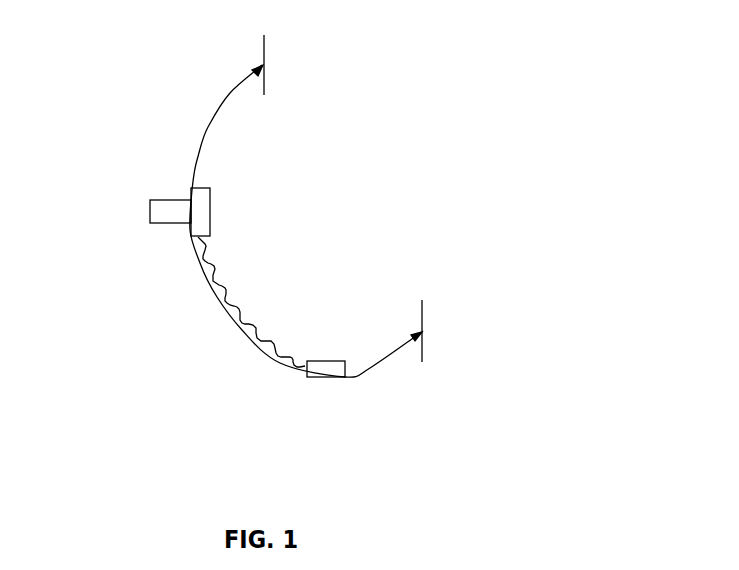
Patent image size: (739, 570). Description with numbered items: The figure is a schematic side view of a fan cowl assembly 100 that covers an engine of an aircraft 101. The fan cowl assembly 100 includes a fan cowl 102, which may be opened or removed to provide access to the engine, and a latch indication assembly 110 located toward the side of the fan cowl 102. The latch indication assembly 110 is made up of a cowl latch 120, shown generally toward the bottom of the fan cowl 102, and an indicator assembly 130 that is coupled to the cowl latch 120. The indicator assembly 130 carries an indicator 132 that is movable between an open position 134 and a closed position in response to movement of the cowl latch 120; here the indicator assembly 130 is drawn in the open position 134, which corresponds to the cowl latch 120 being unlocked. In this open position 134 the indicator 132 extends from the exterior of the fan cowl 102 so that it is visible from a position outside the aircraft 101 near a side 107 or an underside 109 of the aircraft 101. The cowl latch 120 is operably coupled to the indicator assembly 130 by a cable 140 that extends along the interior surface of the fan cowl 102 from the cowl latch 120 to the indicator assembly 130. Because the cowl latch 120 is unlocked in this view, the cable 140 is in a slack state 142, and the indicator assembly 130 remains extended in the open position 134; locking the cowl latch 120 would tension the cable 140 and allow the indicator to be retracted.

The fan cowl assembly 100 is at (208, 65).
The aircraft 101 is at (342, 95).
The fan cowl 102 is at (194, 126).
The side 107 is at (121, 208).
The underside 109 is at (312, 412).
The latch indication assembly 110 is at (177, 252).
The cowl latch 120 is at (347, 362).
The indicator assembly 130 is at (210, 212).
The indicator 132 is at (170, 200).
The open position 134 is at (137, 198).
The cable 140 is at (237, 314).
The slack state 142 is at (287, 340).